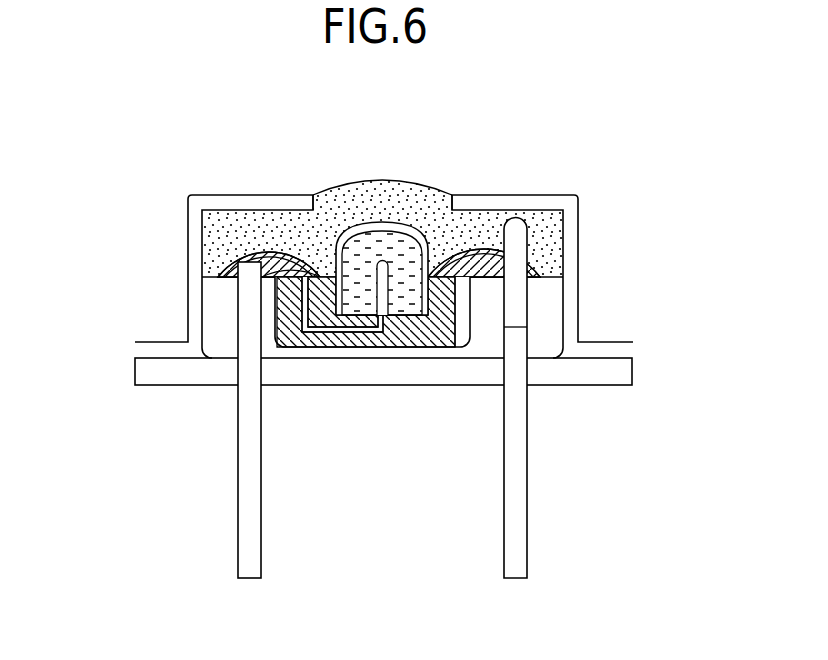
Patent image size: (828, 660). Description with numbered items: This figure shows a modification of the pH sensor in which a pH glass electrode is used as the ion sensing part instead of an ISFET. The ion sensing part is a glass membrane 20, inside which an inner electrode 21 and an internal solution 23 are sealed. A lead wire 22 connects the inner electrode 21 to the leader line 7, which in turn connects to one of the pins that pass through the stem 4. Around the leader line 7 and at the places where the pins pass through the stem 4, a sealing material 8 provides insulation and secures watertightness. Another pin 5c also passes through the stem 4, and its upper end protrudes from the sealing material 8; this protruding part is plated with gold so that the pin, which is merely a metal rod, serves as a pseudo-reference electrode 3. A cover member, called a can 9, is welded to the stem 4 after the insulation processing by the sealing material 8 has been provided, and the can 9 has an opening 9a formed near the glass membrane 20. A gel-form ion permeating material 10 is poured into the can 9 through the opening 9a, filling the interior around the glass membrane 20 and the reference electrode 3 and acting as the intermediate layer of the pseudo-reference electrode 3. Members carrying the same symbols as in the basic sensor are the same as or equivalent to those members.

The reference electrode 3 is at (542, 227).
The stem 4 is at (627, 372).
The pin 5c is at (520, 450).
The leader line 7 is at (278, 258).
The sealing material 8 is at (243, 254).
The can 9 is at (582, 296).
The opening 9a is at (445, 195).
The gel-form ion permeating material 10 is at (210, 247).
The glass membrane 20 is at (395, 222).
The inner electrode 21 is at (386, 296).
The lead wire 22 is at (335, 350).
The internal solution 23 is at (348, 240).